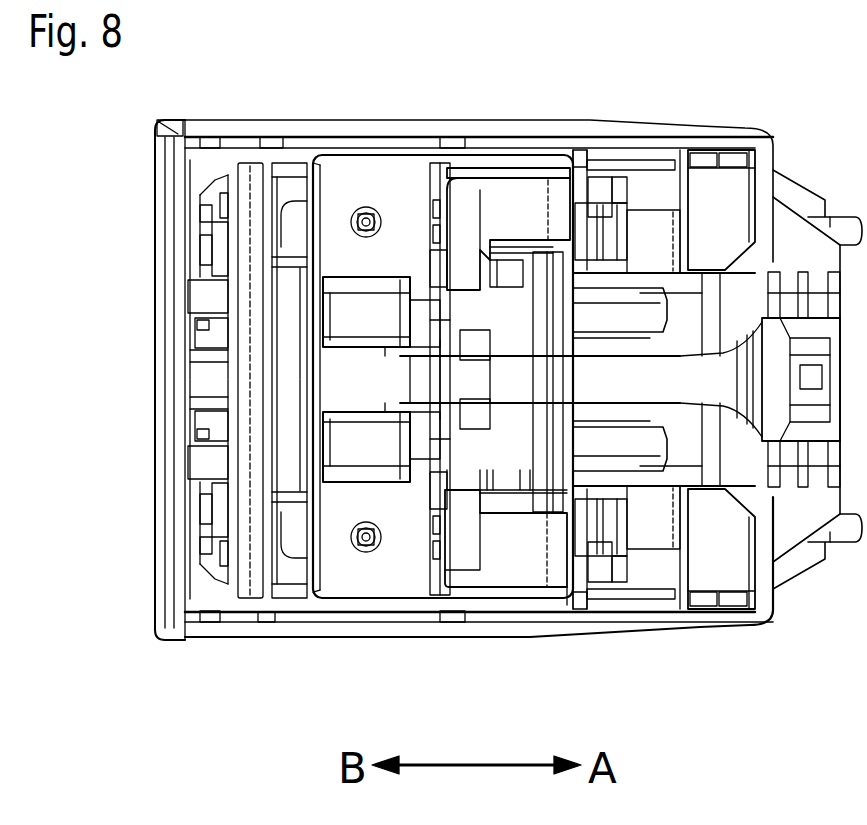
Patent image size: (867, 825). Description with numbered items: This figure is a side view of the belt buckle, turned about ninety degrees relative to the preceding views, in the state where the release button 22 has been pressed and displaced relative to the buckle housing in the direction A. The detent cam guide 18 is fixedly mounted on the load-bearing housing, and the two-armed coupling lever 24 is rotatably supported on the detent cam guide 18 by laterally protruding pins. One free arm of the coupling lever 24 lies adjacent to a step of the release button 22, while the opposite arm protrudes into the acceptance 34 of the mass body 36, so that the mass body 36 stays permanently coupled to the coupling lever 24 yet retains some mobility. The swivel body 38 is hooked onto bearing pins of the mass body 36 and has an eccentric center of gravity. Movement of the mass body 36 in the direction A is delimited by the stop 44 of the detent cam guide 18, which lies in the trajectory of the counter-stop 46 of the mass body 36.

The detent cam guide 18 is at (403, 175).
The release button 22 is at (160, 220).
The coupling lever 24 is at (560, 281).
The acceptance 34 is at (520, 197).
The mass body 36 is at (252, 168).
The swivel body 38 is at (440, 172).
The stop 44 is at (310, 153).
The counter-stop 46 is at (277, 160).